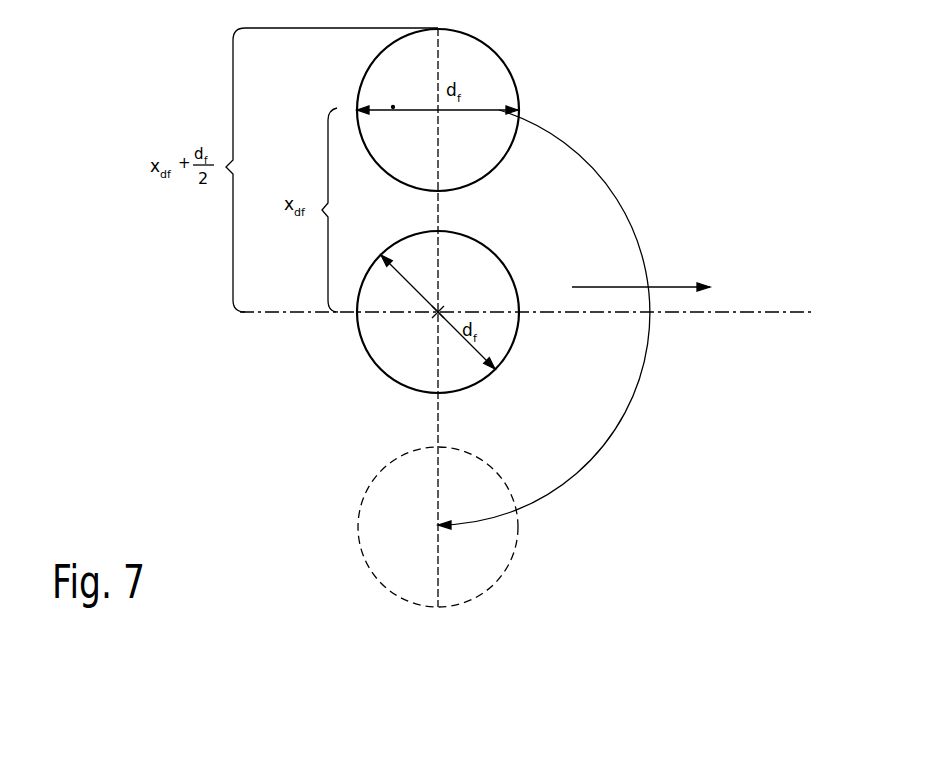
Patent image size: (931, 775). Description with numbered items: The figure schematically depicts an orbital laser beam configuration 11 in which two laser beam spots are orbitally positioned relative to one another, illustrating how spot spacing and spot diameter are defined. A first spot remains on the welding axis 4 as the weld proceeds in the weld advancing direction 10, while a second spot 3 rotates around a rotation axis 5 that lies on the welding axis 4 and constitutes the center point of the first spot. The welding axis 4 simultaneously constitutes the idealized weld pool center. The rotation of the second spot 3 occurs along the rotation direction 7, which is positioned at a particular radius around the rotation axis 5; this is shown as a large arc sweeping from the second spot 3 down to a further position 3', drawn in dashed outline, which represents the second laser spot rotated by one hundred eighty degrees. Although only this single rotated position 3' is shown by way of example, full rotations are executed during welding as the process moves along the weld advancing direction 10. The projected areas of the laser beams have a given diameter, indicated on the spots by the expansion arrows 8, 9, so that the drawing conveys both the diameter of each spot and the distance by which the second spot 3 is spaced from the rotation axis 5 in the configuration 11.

The second spot 3 is at (457, 110).
The position of second laser spot 3' is at (466, 527).
The welding axis 4 is at (745, 312).
The rotation axis 5 is at (434, 314).
The rotation direction 7 is at (613, 432).
The expansion arrow 8 is at (438, 313).
The expansion arrow 9 is at (393, 107).
The weld advancing direction 10 is at (678, 287).
The laser beam configuration 11 is at (300, 413).